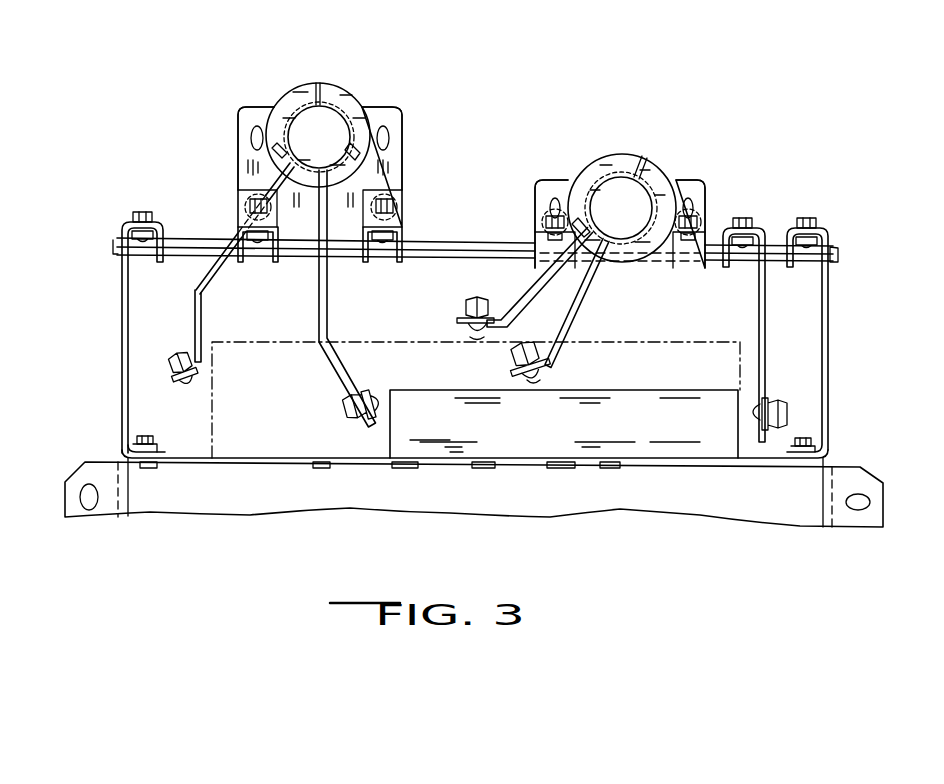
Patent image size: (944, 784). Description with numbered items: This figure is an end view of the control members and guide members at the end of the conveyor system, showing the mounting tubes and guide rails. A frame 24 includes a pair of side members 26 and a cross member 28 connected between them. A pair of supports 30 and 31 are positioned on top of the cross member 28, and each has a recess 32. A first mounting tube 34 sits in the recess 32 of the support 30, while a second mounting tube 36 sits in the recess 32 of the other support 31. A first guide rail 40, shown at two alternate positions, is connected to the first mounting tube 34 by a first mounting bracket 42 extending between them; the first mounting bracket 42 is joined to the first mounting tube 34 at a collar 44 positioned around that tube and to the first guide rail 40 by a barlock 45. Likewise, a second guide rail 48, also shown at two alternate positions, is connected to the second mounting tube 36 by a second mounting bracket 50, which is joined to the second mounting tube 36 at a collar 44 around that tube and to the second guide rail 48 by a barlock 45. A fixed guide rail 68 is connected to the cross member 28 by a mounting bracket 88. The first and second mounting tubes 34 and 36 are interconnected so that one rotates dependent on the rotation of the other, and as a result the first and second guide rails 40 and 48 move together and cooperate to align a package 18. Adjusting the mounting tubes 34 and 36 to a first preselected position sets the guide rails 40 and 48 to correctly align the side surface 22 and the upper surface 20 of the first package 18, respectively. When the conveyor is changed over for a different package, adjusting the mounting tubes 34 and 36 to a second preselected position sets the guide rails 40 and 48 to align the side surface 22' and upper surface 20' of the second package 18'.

The first package 18 is at (474, 502).
The second package 18' is at (244, 502).
The upper surface 20 is at (564, 417).
The upper surface 20' is at (476, 395).
The side surface 22 is at (393, 504).
The side surface 22' is at (202, 470).
The frame 24 is at (110, 328).
The side members 26 is at (120, 390).
The cross member 28 is at (433, 240).
The support 30 is at (408, 132).
The support 31 is at (706, 202).
The recess 32 is at (257, 161).
The first mounting tube 34 is at (310, 122).
The second mounting tube 36 is at (615, 190).
The first guide rail 40 is at (200, 380).
The first mounting bracket 42 is at (208, 288).
The collar 44 is at (347, 105).
The barlock 45 is at (457, 327).
The second guide rail 48 is at (472, 338).
The second mounting bracket 50 is at (540, 278).
The fixed guide rail 68 is at (748, 416).
The mounting bracket 88 is at (758, 306).